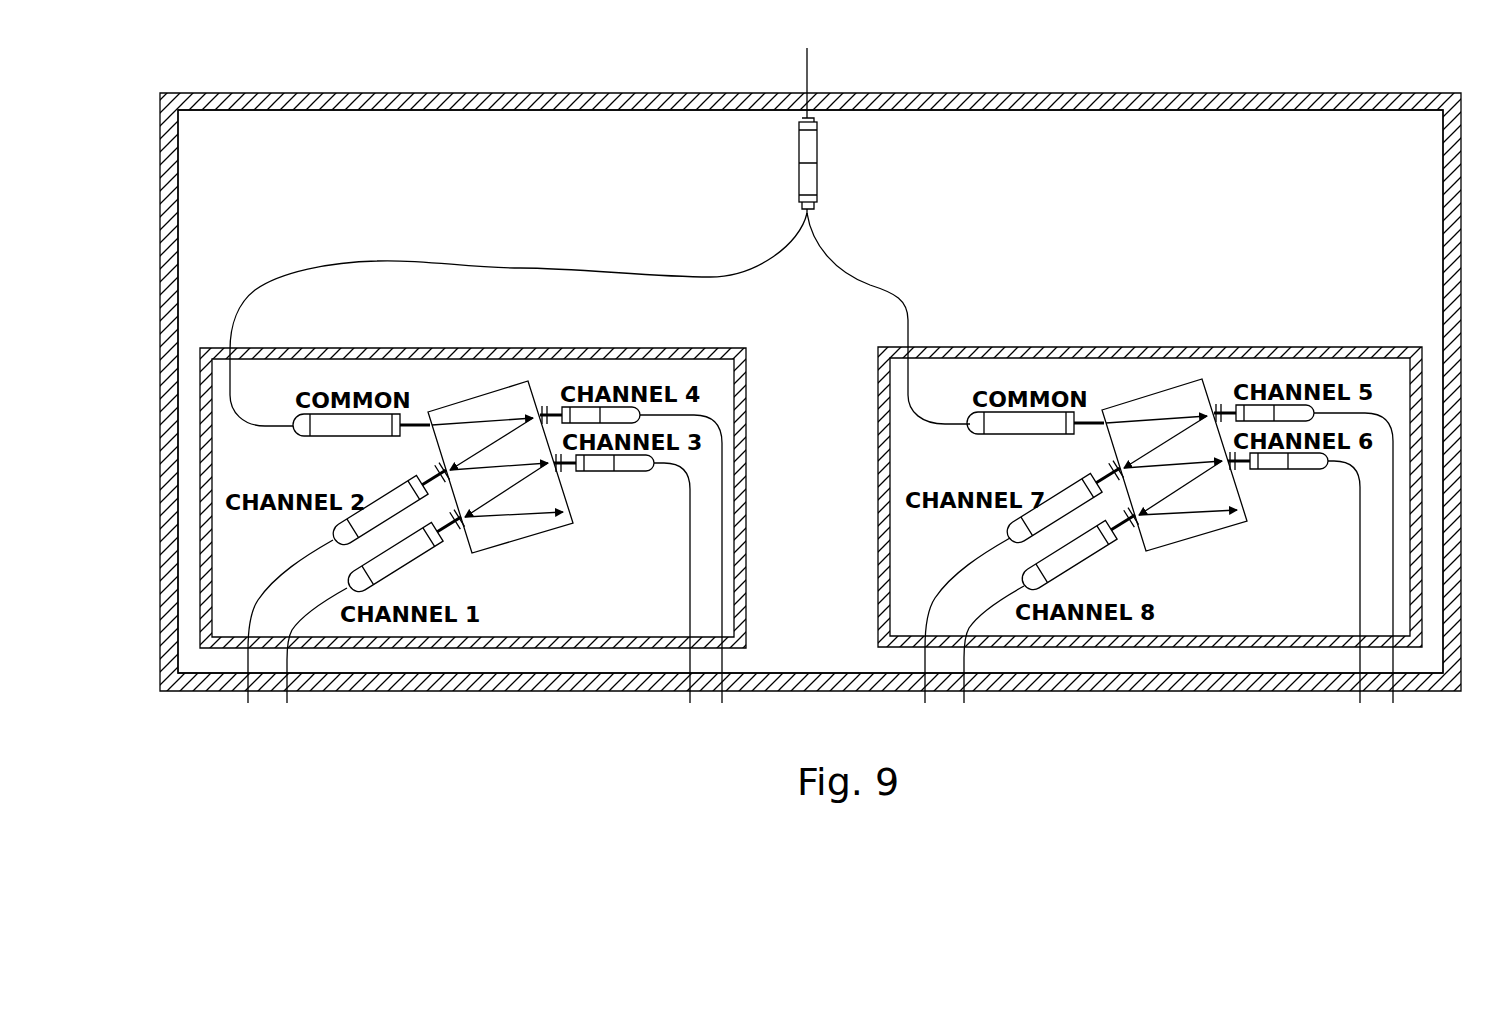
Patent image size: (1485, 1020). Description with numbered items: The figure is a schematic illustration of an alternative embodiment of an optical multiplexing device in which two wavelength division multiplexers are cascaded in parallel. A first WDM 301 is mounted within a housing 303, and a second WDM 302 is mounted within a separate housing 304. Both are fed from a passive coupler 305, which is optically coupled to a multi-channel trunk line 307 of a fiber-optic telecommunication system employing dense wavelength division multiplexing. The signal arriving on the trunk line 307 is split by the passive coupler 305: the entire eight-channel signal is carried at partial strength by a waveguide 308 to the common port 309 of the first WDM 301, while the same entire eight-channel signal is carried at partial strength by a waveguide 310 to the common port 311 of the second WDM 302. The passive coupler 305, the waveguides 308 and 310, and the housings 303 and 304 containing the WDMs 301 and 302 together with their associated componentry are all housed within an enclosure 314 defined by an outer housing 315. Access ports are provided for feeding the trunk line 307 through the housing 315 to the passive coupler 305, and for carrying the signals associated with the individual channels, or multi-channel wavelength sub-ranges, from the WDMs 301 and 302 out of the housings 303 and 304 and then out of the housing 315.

The first WDM 301 is at (463, 392).
The second WDM 302 is at (1146, 388).
The housing 303 is at (565, 348).
The housing 304 is at (1185, 347).
The passive coupler 305 is at (799, 158).
The multi-channel trunk line 307 is at (812, 60).
The waveguide 308 is at (557, 268).
The common port 309 is at (431, 429).
The waveguide 310 is at (868, 277).
The common port 311 is at (1105, 427).
The enclosure 314 is at (1274, 165).
The housing 315 is at (1073, 92).